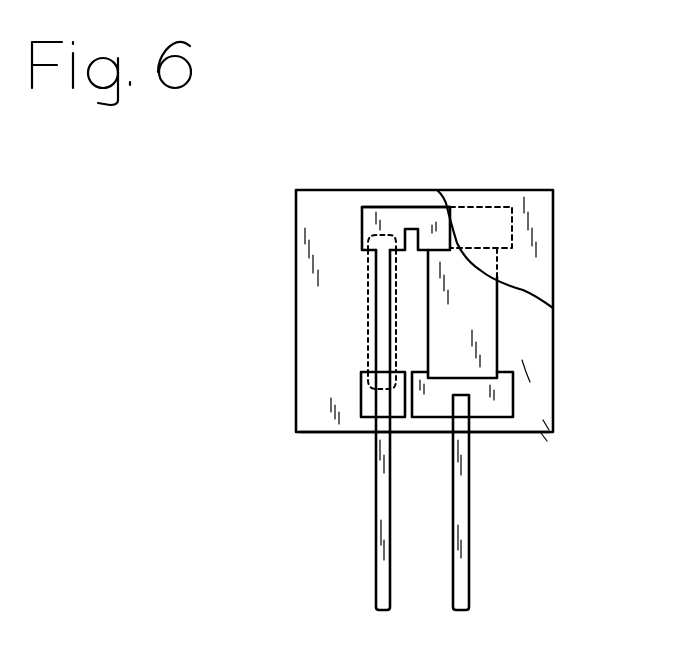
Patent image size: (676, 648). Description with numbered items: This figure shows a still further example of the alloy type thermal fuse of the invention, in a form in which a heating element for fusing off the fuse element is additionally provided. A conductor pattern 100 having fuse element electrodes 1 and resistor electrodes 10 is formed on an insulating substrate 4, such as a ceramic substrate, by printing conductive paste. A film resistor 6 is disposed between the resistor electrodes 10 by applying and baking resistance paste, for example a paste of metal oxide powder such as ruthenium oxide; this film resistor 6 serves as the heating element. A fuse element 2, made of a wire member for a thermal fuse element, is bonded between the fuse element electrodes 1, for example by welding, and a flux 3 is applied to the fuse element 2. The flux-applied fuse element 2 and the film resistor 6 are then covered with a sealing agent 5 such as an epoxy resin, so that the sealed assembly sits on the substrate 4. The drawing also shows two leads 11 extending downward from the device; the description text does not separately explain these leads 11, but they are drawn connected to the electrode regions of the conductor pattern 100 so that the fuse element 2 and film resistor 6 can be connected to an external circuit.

The fuse element electrodes 1 is at (372, 220).
The fuse element 2 is at (377, 292).
The flux 3 is at (365, 328).
The insulating substrate 4 is at (528, 422).
The sealing agent 5 is at (547, 260).
The film resistor 6 is at (490, 331).
The resistor electrodes 10 is at (508, 210).
The lead 11 is at (380, 561).
The conductor pattern 100 is at (415, 215).